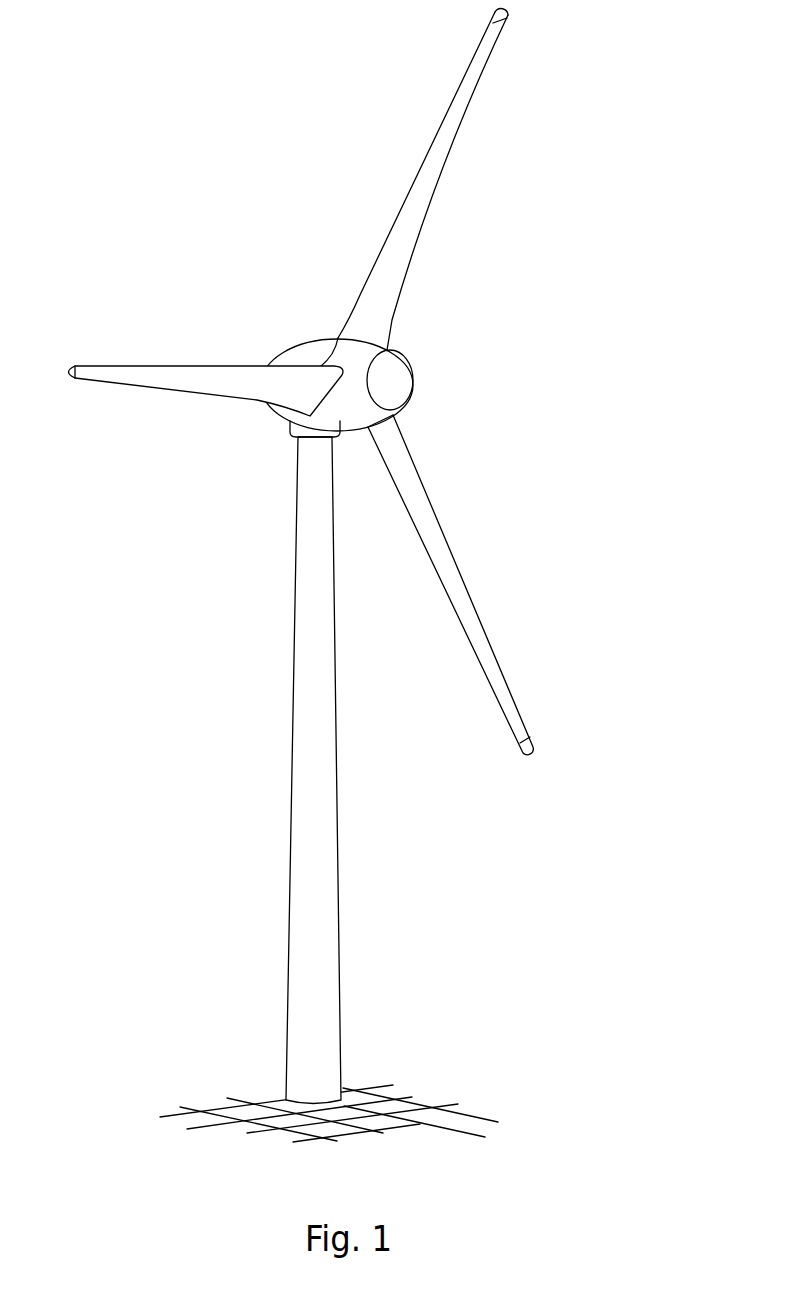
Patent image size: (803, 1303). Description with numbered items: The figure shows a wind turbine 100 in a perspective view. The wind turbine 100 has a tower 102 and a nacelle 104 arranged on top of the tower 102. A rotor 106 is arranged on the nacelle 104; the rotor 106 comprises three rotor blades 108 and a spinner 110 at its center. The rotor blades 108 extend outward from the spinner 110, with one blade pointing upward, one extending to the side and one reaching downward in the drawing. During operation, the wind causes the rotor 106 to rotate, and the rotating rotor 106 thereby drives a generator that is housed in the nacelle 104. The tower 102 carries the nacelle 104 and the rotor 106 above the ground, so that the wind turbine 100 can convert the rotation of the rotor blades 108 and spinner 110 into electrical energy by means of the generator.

The wind turbine 100 is at (346, 575).
The tower 102 is at (320, 872).
The nacelle 104 is at (307, 353).
The rotor 106 is at (346, 382).
The rotor blades 108 is at (455, 137).
The spinner 110 is at (400, 378).